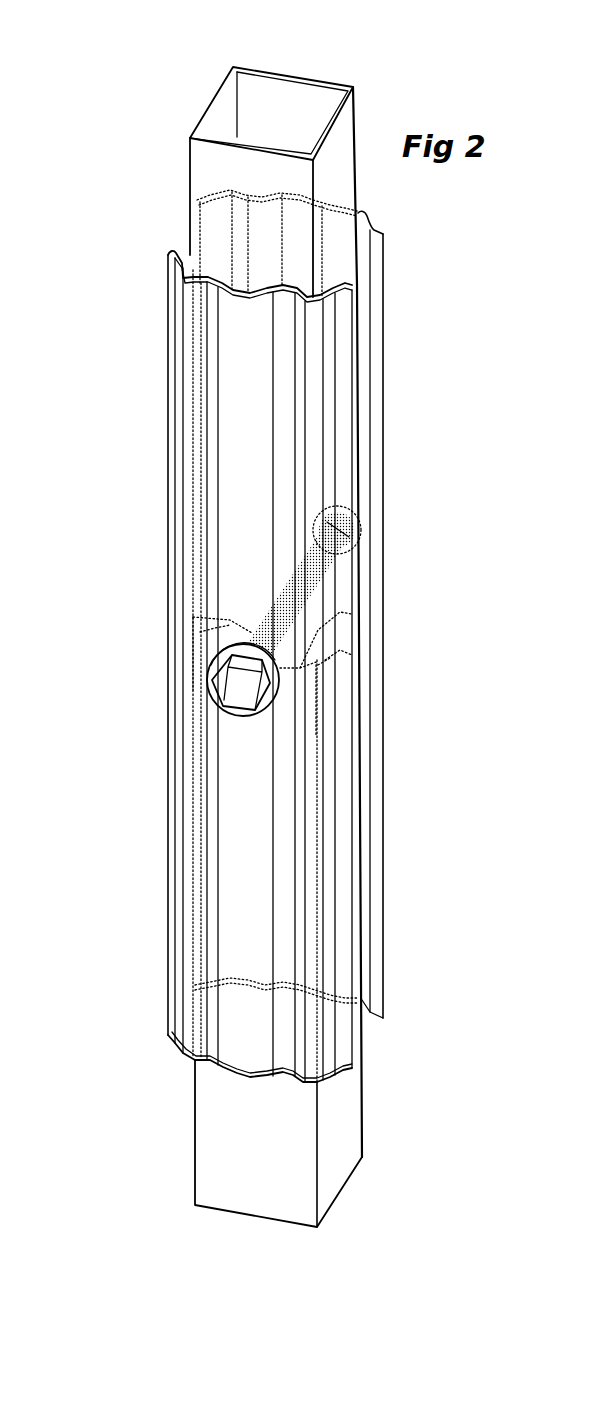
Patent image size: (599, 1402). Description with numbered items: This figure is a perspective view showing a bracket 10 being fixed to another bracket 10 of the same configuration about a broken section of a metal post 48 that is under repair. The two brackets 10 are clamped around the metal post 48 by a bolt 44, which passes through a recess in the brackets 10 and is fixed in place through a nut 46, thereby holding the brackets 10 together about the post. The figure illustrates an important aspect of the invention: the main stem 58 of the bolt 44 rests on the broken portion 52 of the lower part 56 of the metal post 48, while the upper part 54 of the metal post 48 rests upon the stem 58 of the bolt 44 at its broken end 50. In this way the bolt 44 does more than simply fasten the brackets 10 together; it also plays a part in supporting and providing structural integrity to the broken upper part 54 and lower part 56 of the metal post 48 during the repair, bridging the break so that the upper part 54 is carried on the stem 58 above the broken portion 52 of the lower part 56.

The bracket 10 is at (168, 283).
The bolt 44 is at (212, 697).
The nut 46 is at (337, 558).
The metal post 48 is at (364, 122).
The broken end 50 is at (230, 625).
The broken portion 52 is at (325, 663).
The upper part of the metal post 54 is at (207, 187).
The lower part of the metal post 56 is at (240, 1154).
The main stem of the bolt 58 is at (300, 630).